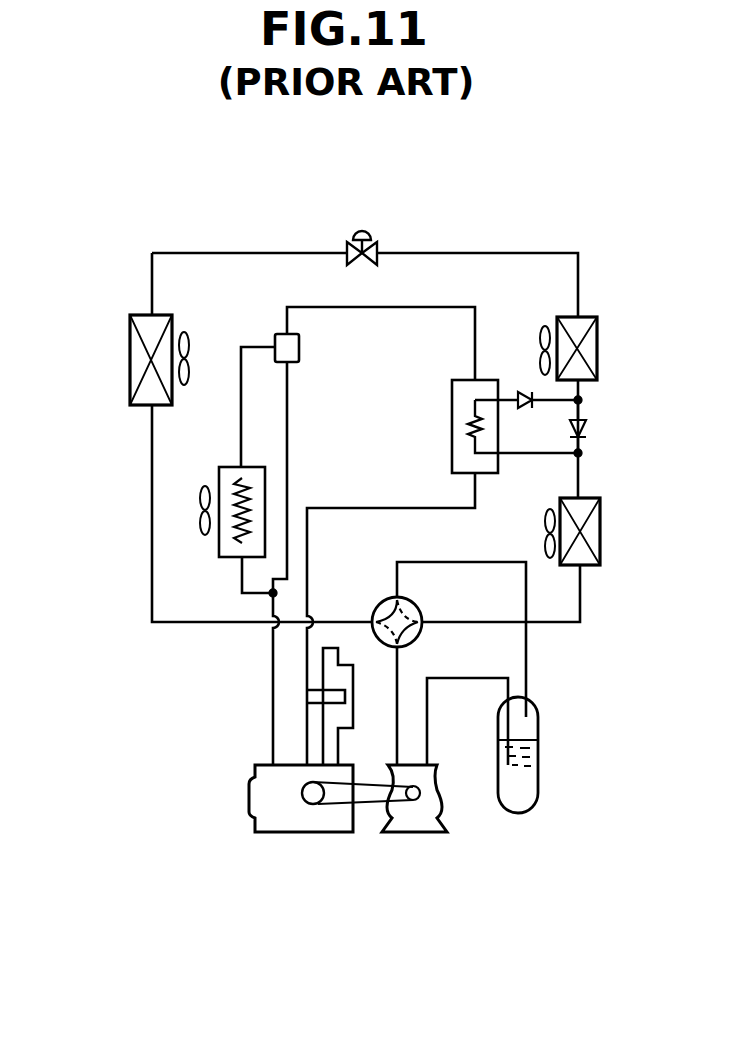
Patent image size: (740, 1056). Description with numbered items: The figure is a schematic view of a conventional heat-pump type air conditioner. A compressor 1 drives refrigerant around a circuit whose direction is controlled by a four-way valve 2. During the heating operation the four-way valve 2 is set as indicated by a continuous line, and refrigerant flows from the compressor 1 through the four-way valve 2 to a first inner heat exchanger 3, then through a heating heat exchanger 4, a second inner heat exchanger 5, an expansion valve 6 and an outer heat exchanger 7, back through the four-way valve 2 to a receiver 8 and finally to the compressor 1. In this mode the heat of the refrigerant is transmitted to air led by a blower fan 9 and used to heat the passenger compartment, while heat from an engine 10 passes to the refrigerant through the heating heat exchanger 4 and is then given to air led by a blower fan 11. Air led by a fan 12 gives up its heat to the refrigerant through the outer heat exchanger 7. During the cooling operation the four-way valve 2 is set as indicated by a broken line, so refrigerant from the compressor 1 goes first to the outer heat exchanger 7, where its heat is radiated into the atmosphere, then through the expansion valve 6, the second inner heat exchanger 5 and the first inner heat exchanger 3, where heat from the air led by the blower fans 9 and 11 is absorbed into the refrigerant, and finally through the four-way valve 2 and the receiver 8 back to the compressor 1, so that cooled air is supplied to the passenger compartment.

The compressor 1 is at (413, 835).
The four-way valve 2 is at (418, 604).
The first inner heat exchanger 3 is at (600, 527).
The heating heat exchanger 4 is at (452, 432).
The second inner heat exchanger 5 is at (597, 345).
The expansion valve 6 is at (366, 231).
The outer heat exchanger 7 is at (130, 350).
The receiver 8 is at (540, 795).
The blower fan 9 is at (547, 524).
The engine 10 is at (250, 798).
The blower fan 11 is at (543, 327).
The fan 12 is at (186, 335).